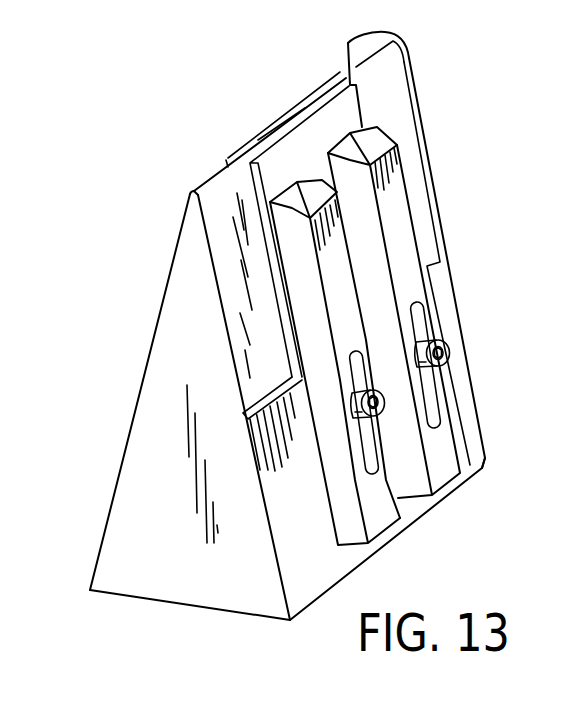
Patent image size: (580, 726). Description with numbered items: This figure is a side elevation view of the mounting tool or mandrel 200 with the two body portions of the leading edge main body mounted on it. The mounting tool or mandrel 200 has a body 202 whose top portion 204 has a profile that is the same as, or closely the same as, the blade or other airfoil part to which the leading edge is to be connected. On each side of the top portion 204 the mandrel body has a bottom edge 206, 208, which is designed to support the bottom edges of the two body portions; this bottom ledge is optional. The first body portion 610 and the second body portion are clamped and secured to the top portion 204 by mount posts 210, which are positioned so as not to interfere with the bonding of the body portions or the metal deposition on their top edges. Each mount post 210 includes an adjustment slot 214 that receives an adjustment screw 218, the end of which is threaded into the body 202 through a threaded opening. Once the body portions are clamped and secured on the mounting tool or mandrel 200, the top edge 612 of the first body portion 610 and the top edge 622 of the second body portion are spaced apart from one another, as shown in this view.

The mounting tool or mandrel 200 is at (135, 481).
The body 202 is at (139, 442).
The top portion 204 is at (176, 334).
The bottom edge 206 is at (246, 417).
The bottom edge 208 is at (143, 394).
The mount post 210 is at (338, 287).
The adjustment slot 214 is at (372, 452).
The adjustment screw 218 is at (376, 398).
The first body portion 610 is at (345, 116).
The top edge 612 is at (348, 46).
The top edge 622 is at (280, 118).